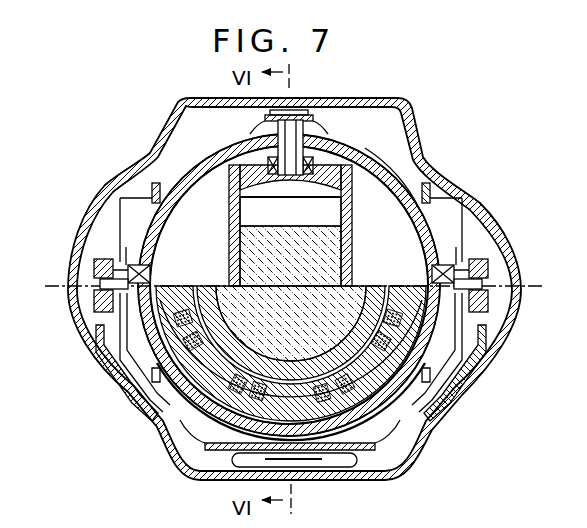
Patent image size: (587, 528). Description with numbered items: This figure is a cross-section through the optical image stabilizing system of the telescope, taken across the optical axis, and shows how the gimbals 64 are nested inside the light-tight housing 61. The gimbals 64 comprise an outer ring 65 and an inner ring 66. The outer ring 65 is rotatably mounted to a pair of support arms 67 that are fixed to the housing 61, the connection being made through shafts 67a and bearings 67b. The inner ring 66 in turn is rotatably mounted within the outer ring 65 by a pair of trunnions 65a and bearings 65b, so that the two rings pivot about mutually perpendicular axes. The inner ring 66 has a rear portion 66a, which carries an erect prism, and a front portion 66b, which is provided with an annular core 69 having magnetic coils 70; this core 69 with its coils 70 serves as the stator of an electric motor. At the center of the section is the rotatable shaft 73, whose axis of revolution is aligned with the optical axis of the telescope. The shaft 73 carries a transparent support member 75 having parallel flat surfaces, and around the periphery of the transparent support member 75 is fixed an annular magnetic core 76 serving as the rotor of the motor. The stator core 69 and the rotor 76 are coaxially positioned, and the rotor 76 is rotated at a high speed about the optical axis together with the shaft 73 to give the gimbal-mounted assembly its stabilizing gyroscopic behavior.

The light-tight housing 61 is at (384, 100).
The gimbals 64 is at (387, 149).
The outer ring 65 is at (393, 170).
The trunnions 65a is at (293, 128).
The bearings 65b is at (287, 157).
The inner ring 66 is at (334, 161).
The rear portion of the inner ring 66a is at (262, 177).
The front portion of the inner ring 66b is at (360, 403).
The support arms 67 is at (143, 382).
The shafts 67a is at (118, 292).
The bearings 67b is at (148, 271).
The annular core 69 is at (309, 413).
The magnetic coils 70 is at (233, 387).
The rotatable shaft 73 is at (291, 333).
The transparent support member 75 is at (347, 320).
The annular magnetic core 76 is at (360, 350).